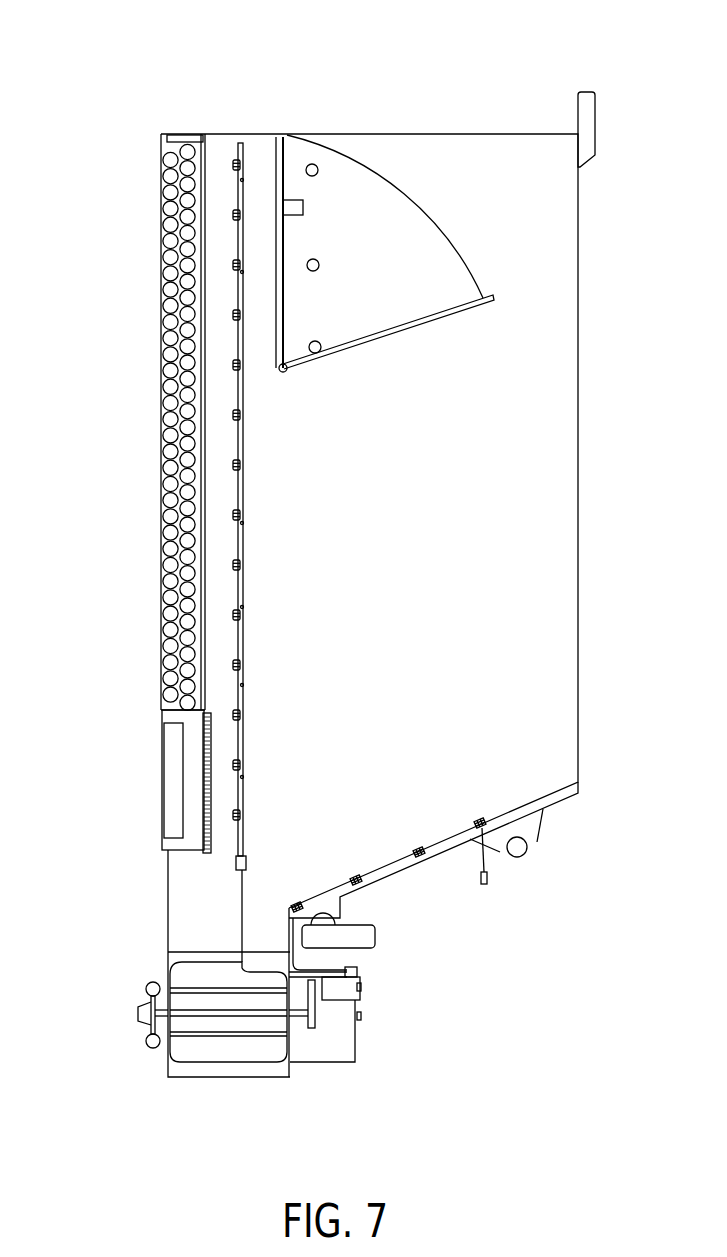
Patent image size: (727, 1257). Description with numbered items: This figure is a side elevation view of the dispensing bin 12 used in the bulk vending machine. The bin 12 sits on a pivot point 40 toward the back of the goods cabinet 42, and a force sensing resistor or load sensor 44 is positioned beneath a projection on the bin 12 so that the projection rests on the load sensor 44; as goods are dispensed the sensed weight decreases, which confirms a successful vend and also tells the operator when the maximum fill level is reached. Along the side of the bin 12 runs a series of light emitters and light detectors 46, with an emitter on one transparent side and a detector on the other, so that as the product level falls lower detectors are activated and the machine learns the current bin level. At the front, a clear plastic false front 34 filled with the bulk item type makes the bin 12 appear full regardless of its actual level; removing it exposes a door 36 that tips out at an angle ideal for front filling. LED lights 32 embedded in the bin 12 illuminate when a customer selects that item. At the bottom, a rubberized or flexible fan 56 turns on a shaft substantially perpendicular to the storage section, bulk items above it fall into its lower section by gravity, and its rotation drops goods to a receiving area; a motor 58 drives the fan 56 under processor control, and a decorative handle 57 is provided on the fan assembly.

The bin 12 is at (88, 78).
The LED lights 32 is at (205, 795).
The false front 34 is at (176, 247).
The door 36 is at (390, 203).
The pivot point 40 is at (517, 858).
The goods cabinet 42 is at (563, 665).
The load sensor 44 is at (338, 924).
The light emitters and light detectors 46 is at (237, 160).
The fan 56 is at (207, 1047).
The decorative handle 57 is at (138, 1012).
The motor 58 is at (337, 989).